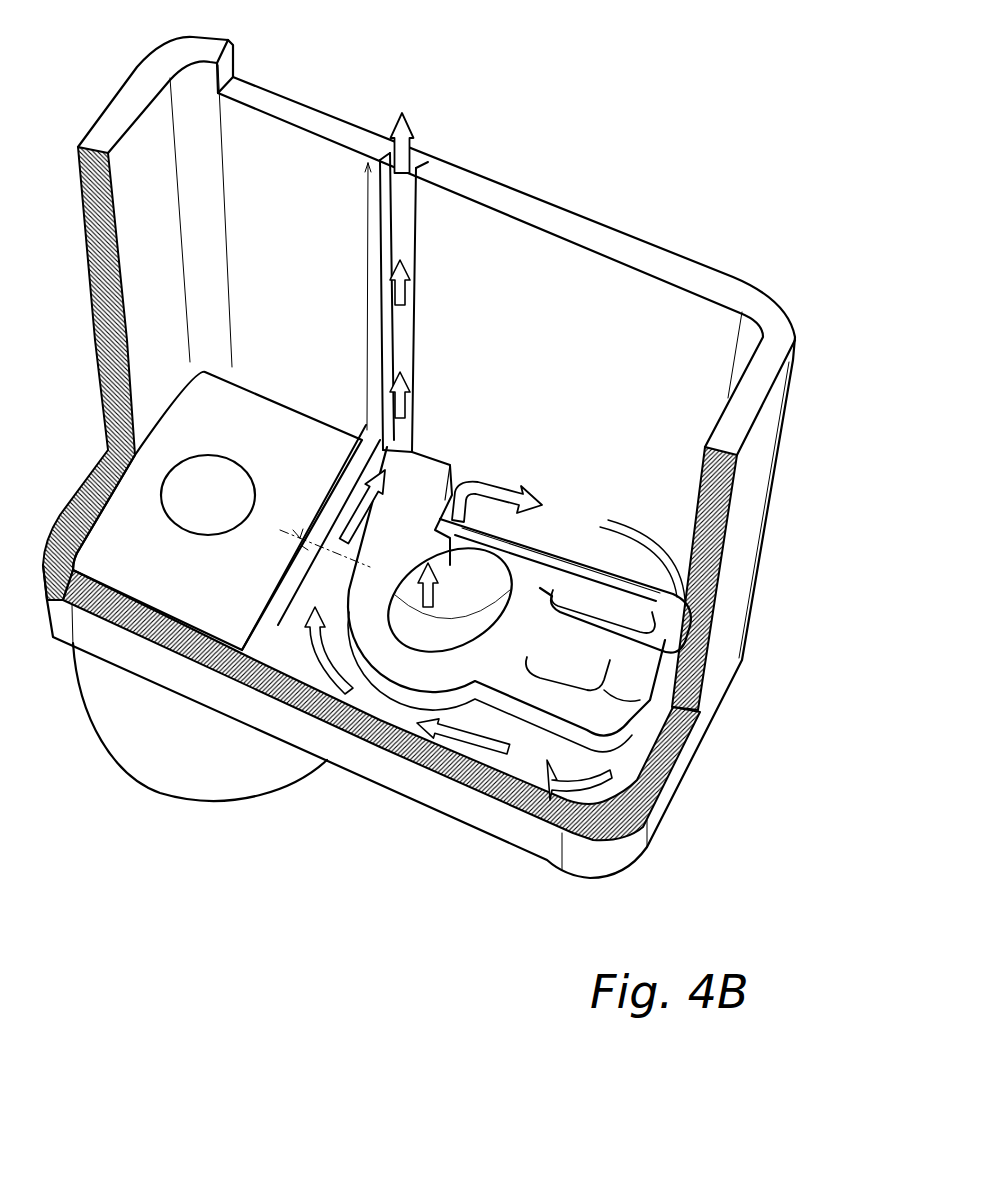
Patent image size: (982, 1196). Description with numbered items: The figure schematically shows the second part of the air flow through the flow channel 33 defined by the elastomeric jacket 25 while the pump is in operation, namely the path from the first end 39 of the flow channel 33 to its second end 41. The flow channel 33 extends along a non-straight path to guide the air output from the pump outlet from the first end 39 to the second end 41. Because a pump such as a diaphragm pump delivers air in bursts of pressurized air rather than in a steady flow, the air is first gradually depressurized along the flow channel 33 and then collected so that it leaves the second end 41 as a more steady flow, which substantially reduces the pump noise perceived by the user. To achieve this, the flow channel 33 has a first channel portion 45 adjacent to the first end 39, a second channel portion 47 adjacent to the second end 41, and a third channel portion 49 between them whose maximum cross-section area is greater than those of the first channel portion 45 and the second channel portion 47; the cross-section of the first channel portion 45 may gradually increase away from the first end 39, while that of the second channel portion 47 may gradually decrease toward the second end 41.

The elastomeric jacket 25 is at (747, 533).
The flow channel 33 is at (573, 533).
The first end 39 is at (452, 540).
The second end 41 is at (423, 153).
The first channel portion 45 is at (548, 532).
The second channel portion 47 is at (368, 340).
The third channel portion 49 is at (268, 595).